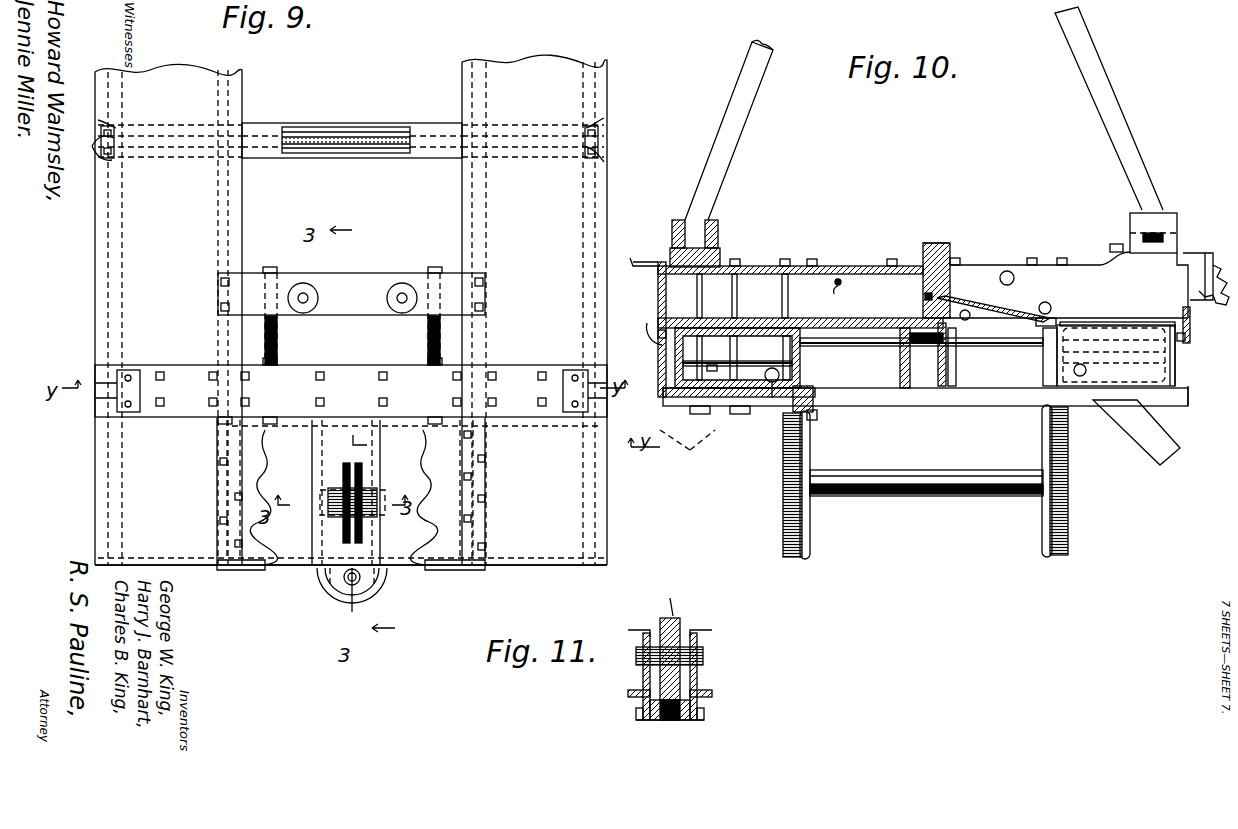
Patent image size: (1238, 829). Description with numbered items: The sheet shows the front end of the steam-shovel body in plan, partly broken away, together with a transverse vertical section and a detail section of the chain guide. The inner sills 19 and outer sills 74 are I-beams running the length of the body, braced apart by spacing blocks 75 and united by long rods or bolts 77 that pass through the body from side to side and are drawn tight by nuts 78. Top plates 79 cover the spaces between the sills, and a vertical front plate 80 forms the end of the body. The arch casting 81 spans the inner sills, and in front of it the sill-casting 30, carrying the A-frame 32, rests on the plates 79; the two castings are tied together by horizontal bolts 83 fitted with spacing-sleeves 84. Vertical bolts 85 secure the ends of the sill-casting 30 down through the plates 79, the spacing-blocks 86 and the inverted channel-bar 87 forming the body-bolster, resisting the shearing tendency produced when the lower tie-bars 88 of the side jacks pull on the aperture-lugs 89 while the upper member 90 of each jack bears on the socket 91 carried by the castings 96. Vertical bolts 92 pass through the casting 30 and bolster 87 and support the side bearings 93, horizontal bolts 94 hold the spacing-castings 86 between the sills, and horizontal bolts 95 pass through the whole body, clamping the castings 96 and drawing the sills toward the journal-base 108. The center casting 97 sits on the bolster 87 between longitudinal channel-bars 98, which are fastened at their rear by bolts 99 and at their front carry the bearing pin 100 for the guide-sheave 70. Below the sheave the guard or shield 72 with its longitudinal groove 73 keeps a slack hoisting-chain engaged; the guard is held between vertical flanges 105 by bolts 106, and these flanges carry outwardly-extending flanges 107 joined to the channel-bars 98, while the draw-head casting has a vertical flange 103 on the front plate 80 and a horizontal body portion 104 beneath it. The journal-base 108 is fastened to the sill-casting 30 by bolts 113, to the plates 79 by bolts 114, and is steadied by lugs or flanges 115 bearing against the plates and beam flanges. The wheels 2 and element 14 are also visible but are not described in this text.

In FIG. 10, the wheel 2 is at (810, 540).
In FIG. 10, the gear housing 14 is at (675, 380).
In FIG. 10, the inner sills 19 is at (800, 383).
In FIG. 9, the sill-casting 30 is at (521, 370).
In FIG. 10, the sill-casting 30 is at (866, 267).
In FIG. 10, the A-frame 32 is at (730, 144).
In FIG. 11, the guide-sheave 70 is at (682, 628).
In FIG. 11, the guard or shield 72 is at (700, 710).
In FIG. 11, the longitudinal groove 73 is at (670, 720).
In FIG. 10, the outer sills 74 is at (1178, 379).
In FIG. 9, the spacing blocks 75 is at (294, 123).
In FIG. 9, the rods or bolts 77 is at (350, 128).
In FIG. 9, the nuts 78 is at (112, 160).
In FIG. 9, the top plates 79 is at (120, 268).
In FIG. 10, the top plates 79 is at (752, 318).
In FIG. 9, the front plate 80 is at (288, 566).
In FIG. 9, the arch casting 81 is at (370, 273).
In FIG. 10, the bolts 83 is at (1050, 283).
In FIG. 9, the spacing-sleeves 84 is at (300, 332).
In FIG. 10, the vertical bolts 85 is at (732, 305).
In FIG. 10, the spacing-blocks 86 is at (752, 414).
In FIG. 10, the inverted channel-bar 87 is at (696, 414).
In FIG. 10, the lower tie-bars 88 is at (1125, 420).
In FIG. 10, the aperture-lugs 89 is at (772, 400).
In FIG. 10, the upper member 90 is at (640, 266).
In FIG. 10, the socket 91 is at (656, 262).
In FIG. 10, the vertical bolts 92 is at (805, 254).
In FIG. 10, the side bearings 93 is at (810, 412).
In FIG. 10, the horizontal bolts 94 is at (1185, 341).
In FIG. 10, the horizontal bolts 95 is at (866, 346).
In FIG. 10, the castings 96 is at (658, 330).
In FIG. 10, the center casting 97 is at (918, 398).
In FIG. 9, the longitudinal channel-bars 98 is at (313, 465).
In FIG. 10, the longitudinal channel-bars 98 is at (900, 372).
In FIG. 11, the longitudinal channel-bars 98 is at (643, 641).
In FIG. 10, the bolts 99 is at (910, 306).
In FIG. 9, the bearing pin or journal 100 is at (322, 500).
In FIG. 11, the bearing pin or journal 100 is at (703, 660).
In FIG. 9, the vertical flange 103 is at (386, 578).
In FIG. 9, the horizontal body portion 104 is at (326, 580).
In FIG. 11, the vertical flanges 105 is at (694, 722).
In FIG. 10, the bolts 106 is at (985, 300).
In FIG. 11, the bolts 106 is at (704, 716).
In FIG. 11, the outwardly-extending flanges 107 is at (712, 694).
In FIG. 9, the base portion 108 is at (218, 484).
In FIG. 10, the bolts 113 is at (1050, 305).
In FIG. 9, the bolts 114 is at (471, 478).
In FIG. 10, the bolts 114 is at (1056, 320).
In FIG. 10, the lugs or flanges 115 is at (1066, 345).